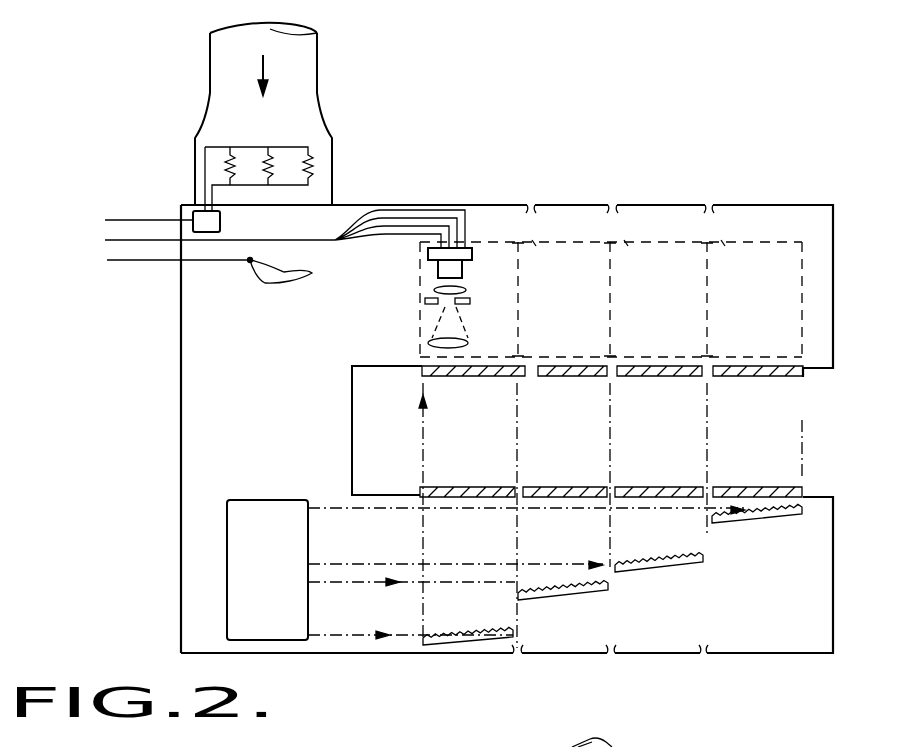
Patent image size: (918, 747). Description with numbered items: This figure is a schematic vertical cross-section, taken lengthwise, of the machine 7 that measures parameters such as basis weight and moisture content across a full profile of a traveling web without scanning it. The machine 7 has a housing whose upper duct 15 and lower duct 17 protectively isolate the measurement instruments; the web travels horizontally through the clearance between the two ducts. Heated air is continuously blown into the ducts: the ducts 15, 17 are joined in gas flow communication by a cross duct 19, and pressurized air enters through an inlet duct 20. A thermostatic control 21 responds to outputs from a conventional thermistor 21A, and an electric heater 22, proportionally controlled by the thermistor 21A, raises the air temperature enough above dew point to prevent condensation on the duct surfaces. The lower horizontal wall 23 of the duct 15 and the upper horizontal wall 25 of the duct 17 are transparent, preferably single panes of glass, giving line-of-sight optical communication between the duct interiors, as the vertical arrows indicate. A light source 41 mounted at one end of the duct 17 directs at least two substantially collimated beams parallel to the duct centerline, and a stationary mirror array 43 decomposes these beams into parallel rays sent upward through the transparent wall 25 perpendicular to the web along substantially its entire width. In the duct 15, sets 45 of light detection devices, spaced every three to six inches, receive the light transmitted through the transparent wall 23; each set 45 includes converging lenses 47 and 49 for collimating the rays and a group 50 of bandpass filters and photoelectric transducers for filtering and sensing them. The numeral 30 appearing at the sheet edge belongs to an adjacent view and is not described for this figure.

The machine 7 is at (580, 170).
The duct 15 is at (833, 268).
The duct 17 is at (833, 578).
The cross duct 19 is at (180, 430).
The inlet duct 20 is at (318, 70).
The thermostatic control 21 is at (220, 220).
The thermistor 21A is at (300, 283).
The heater 22 is at (310, 164).
The transparent wall 23 is at (795, 378).
The transparent wall 25 is at (773, 487).
The element of adjacent figure 30 is at (540, 746).
The light source 41 is at (278, 500).
The mirror array 43 is at (606, 594).
The set of light detection devices 45 is at (358, 247).
The converging lens 47 is at (430, 343).
The converging lens 49 is at (430, 288).
The set of filtering and sensing components 50 is at (412, 250).